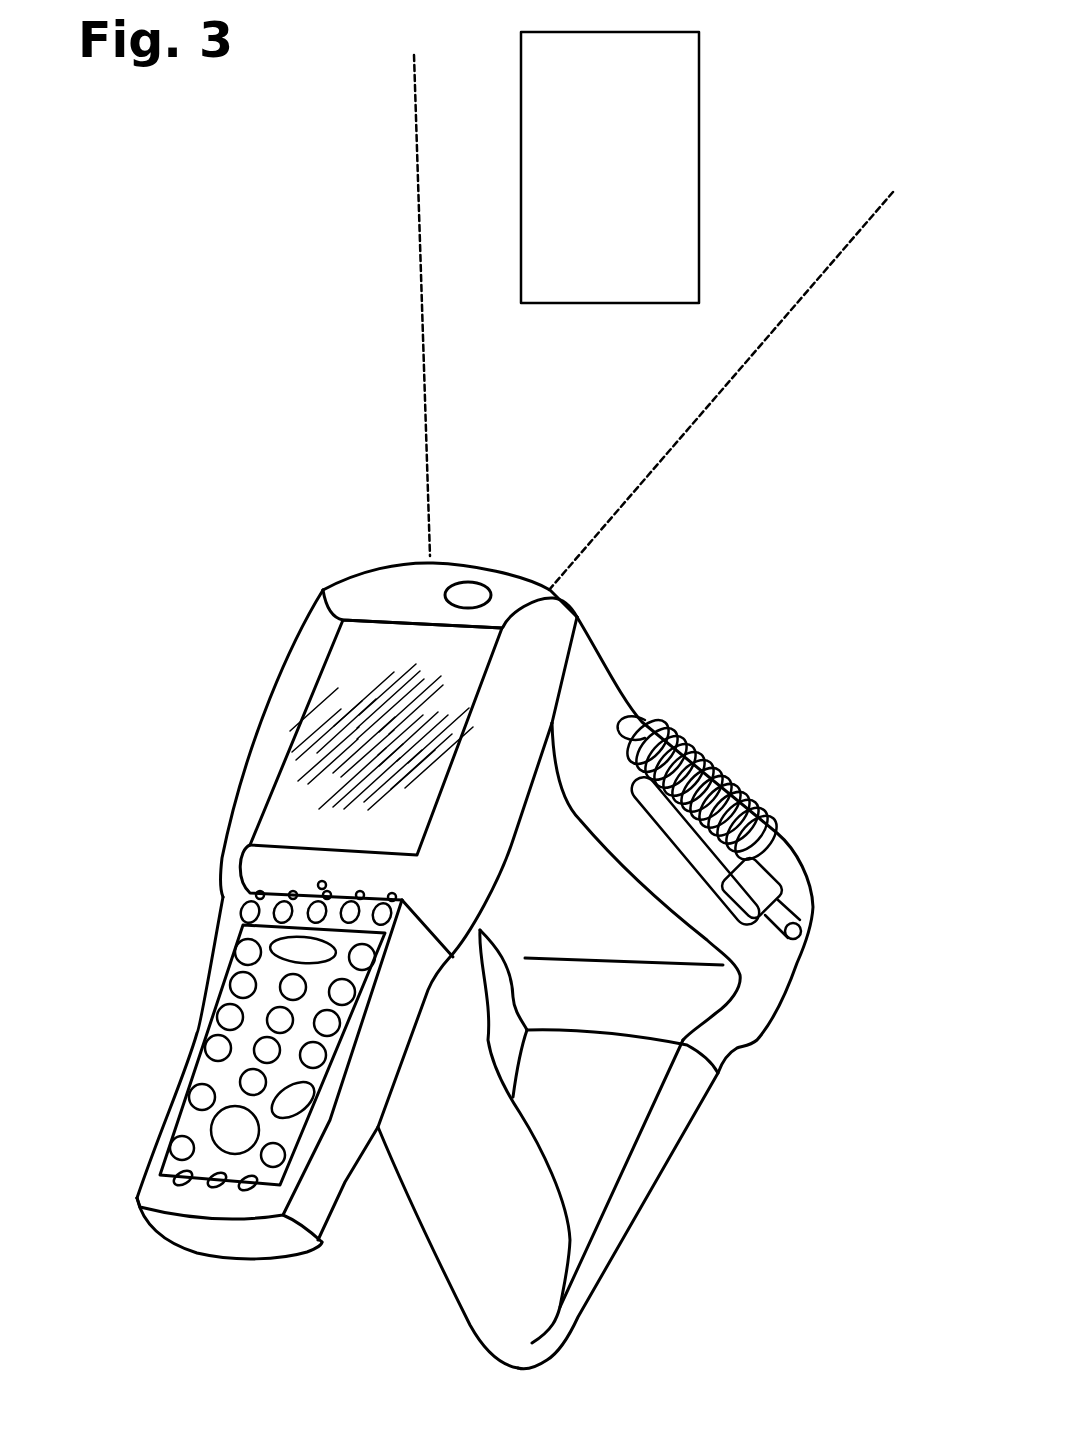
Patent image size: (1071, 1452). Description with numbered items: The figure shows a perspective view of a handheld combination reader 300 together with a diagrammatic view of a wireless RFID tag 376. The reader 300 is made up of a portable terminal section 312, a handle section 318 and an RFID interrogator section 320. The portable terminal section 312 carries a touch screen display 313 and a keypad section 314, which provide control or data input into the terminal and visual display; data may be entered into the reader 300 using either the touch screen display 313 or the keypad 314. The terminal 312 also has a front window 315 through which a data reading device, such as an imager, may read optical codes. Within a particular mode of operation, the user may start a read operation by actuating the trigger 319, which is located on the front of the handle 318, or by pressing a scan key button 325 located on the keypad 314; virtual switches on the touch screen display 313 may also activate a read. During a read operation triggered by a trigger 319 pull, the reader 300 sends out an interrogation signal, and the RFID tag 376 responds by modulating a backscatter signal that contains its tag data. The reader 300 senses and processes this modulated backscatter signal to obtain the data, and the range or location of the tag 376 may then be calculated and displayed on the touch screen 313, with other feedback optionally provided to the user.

The handheld combination reader 300 is at (766, 566).
The portable terminal section 312 is at (208, 908).
The touch screen display 313 is at (372, 671).
The keypad section 314 is at (197, 1095).
The front window 315 is at (400, 562).
The handle section 318 is at (452, 1247).
The trigger 319 is at (457, 953).
The RFID interrogator section 320 is at (752, 763).
The scan key button 325 is at (237, 985).
The RFID tag 376 is at (582, 181).